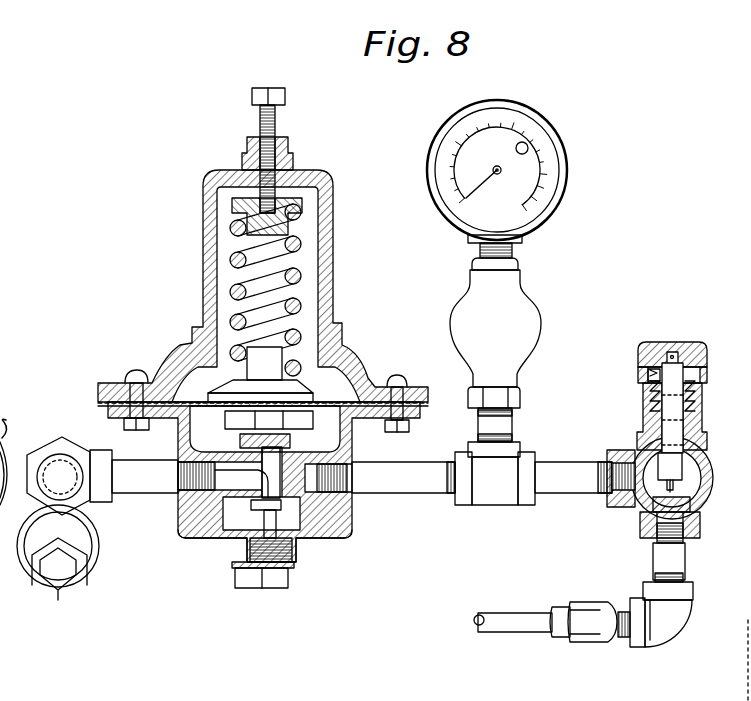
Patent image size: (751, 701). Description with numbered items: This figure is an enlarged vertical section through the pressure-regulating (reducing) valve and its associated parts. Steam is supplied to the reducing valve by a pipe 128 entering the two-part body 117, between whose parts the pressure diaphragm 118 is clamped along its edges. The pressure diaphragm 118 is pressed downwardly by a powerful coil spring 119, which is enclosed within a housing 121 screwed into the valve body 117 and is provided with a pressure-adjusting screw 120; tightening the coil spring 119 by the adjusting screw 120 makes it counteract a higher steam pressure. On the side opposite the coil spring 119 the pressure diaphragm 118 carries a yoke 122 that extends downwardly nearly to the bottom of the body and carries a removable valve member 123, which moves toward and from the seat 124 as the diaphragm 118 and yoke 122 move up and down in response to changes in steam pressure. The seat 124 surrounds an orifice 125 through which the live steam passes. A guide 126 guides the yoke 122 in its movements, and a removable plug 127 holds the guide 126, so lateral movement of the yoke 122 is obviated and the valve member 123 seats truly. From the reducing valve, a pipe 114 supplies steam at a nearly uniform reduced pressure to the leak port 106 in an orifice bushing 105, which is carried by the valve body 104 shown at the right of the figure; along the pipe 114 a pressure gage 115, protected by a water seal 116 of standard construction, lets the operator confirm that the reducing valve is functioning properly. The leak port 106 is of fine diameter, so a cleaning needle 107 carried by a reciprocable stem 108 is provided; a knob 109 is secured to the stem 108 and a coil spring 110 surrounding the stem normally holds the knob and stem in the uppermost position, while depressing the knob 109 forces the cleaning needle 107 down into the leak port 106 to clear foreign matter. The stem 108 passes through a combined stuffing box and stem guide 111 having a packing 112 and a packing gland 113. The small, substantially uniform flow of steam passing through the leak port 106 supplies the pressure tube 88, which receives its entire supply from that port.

The pressure tube 88 is at (505, 625).
The valve body 104 is at (638, 450).
The orifice bushing 105 is at (655, 512).
The leak port 106 is at (690, 503).
The cleaning needle 107 is at (678, 470).
The stem 108 is at (661, 399).
The knob 109 is at (652, 347).
The coil spring 110 is at (648, 368).
The combined stuffing box and stem guide 111 is at (712, 395).
The packing 112 is at (645, 420).
The packing gland 113 is at (650, 390).
The pipe 114 is at (436, 485).
The pressure gage 115 is at (558, 206).
The water seal 116 is at (525, 322).
The two-part body 117 is at (360, 352).
The pressure diaphragm 118 is at (325, 403).
The coil spring 119 is at (231, 258).
The pressure-adjusting screw 120 is at (276, 118).
The housing 121 is at (334, 250).
The yoke 122 is at (272, 452).
The valve member 123 is at (322, 540).
The seat 124 is at (272, 502).
The orifice 125 is at (218, 500).
The guide 126 is at (258, 538).
The removable plug 127 is at (252, 586).
The pipe 128 is at (131, 485).